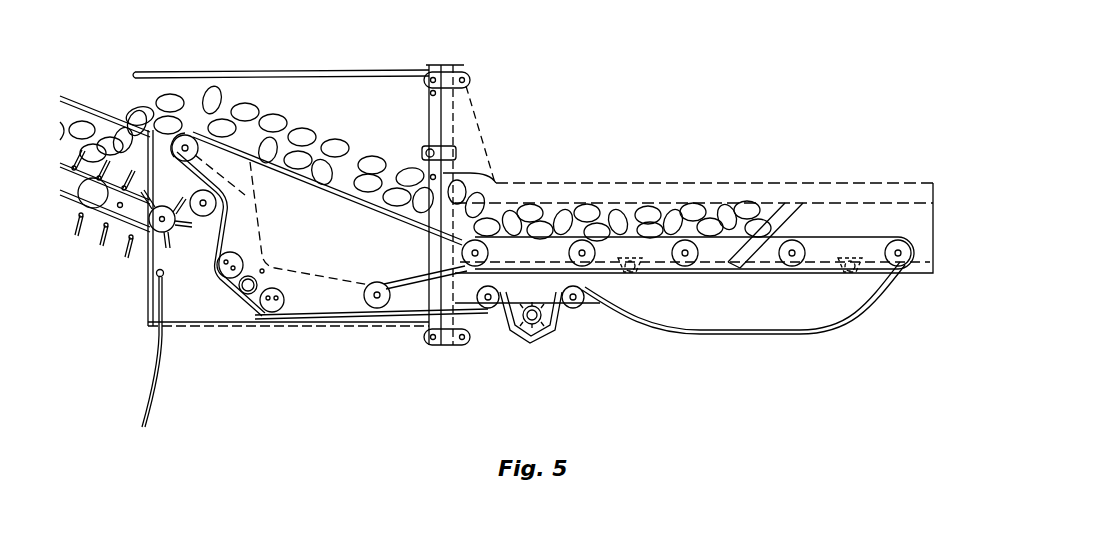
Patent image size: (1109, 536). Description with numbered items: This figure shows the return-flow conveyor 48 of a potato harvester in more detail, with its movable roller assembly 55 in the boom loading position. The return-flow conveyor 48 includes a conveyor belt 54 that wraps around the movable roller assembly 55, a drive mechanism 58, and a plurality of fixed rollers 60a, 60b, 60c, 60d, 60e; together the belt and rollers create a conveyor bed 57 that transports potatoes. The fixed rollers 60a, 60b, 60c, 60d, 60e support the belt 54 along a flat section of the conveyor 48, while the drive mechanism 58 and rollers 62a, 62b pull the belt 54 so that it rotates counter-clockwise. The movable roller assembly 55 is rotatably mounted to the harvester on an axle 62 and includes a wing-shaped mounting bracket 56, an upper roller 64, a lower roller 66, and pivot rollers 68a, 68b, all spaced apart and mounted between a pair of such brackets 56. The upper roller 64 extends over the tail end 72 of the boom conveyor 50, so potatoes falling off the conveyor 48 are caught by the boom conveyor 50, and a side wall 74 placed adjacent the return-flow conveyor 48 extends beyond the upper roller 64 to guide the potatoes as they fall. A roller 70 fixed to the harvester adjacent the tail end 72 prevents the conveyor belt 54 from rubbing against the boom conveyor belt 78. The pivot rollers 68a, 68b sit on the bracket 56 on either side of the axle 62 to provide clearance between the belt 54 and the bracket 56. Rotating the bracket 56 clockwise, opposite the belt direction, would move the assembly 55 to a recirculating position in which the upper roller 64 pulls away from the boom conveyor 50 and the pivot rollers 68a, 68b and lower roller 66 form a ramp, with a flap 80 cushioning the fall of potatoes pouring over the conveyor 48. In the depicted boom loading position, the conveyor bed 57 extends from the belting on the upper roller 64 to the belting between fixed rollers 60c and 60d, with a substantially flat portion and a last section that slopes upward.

The return-flow conveyor 48 is at (580, 151).
The boom conveyor 50 is at (72, 103).
The conveyor belt 54 is at (745, 336).
The movable roller assembly 55 is at (293, 307).
The wing-shaped mounting bracket 56 is at (310, 296).
The conveyor bed 57 is at (252, 150).
The drive mechanism 58 is at (548, 330).
The fixed roller 60a is at (484, 312).
The fixed roller 60b is at (586, 266).
The fixed roller 60c is at (686, 268).
The fixed roller 60d is at (792, 268).
The fixed roller 60e is at (900, 268).
The axle 62 is at (247, 303).
The roller 62a is at (518, 323).
The roller 62b is at (577, 310).
The upper roller 64 is at (185, 135).
The lower roller 66 is at (377, 308).
The pivot roller 68a is at (228, 274).
The pivot roller 68b is at (270, 313).
The roller 70 is at (203, 217).
The tail end 72 is at (162, 226).
The side wall 74 is at (131, 82).
The boom conveyor belt 78 is at (117, 228).
The flap 80 is at (156, 343).